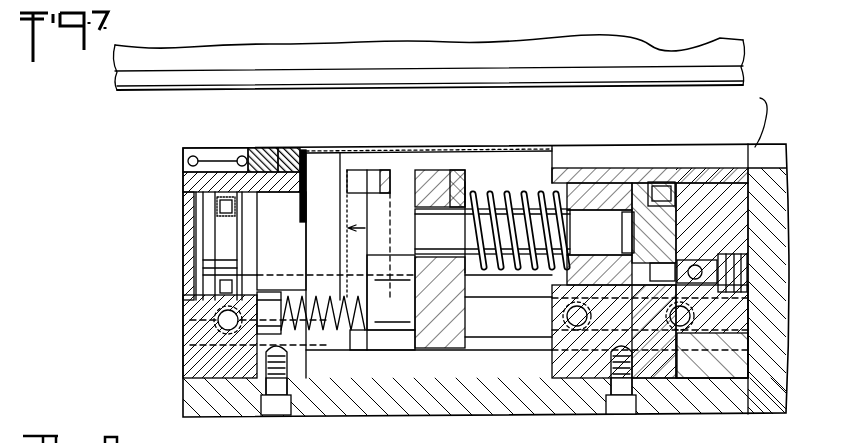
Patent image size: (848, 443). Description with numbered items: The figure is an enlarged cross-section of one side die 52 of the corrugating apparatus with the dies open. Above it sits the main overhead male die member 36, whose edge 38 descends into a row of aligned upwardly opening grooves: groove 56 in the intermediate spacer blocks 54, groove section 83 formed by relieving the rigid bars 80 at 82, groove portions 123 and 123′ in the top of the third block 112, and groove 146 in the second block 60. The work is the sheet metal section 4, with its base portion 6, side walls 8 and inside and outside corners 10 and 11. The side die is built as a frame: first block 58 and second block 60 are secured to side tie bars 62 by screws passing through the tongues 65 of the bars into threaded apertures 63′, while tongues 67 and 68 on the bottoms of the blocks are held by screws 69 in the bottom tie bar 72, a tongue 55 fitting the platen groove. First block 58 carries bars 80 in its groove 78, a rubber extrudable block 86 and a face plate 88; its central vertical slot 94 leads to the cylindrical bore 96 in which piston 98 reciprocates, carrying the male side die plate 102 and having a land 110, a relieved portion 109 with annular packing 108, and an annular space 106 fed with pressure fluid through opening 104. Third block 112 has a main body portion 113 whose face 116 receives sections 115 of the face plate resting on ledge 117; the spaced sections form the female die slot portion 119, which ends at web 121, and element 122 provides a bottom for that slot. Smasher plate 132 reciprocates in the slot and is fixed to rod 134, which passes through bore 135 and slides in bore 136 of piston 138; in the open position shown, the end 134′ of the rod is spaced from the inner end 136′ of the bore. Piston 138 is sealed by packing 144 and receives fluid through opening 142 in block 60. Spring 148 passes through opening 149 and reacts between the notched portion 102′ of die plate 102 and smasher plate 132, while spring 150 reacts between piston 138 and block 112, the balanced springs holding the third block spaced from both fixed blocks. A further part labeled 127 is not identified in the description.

The main overhead male die member 36 is at (402, 46).
The edge of main overhead male die member 38 is at (436, 88).
The relieved end portion of bars 82 is at (192, 150).
The rigid bars 80 is at (208, 150).
The piston 98 is at (258, 160).
The extrudable block 86 is at (265, 150).
The face plate 88 is at (288, 150).
The outside corner 11 is at (312, 153).
The groove continuation 123′ is at (358, 150).
The face of main body portion 116 is at (388, 153).
The groove portion 123 is at (422, 150).
The base portion 6 is at (506, 150).
The sheet metal section 4 is at (590, 150).
The upwardly opening groove 146 is at (648, 150).
The upwardly opening groove 56 is at (767, 153).
The groove section 83 is at (185, 163).
The groove in first block 78 is at (185, 177).
The inside corner 10 is at (323, 265).
The side walls 8 is at (308, 205).
The element with concave edge 122 is at (385, 190).
The bore in main body portion 135 is at (435, 205).
The compression spring 150 is at (498, 200).
The bore of piston 136 is at (636, 172).
The packing 144 is at (678, 200).
The piston 138 is at (700, 208).
The second block 60 is at (770, 205).
The opening 142 is at (745, 240).
The intermediate spacer blocks 54 is at (775, 262).
The annular packing 108 is at (225, 210).
The relieved portion of piston 109 is at (228, 220).
The land on piston 110 is at (208, 236).
The opening in block wall 104 is at (196, 248).
The annular space 106 is at (215, 288).
The cylindrical bore 96 is at (205, 298).
The first block 58 is at (176, 329).
The threaded apertures 63′ is at (222, 325).
The central vertical slot 94 is at (250, 322).
The male side die plate 102 is at (281, 241).
The notched portion of die plate 102′ is at (278, 292).
The side tie bars 62 is at (404, 260).
The female side die slot portion 119 is at (338, 229).
The central web portion 121 is at (330, 232).
The ledge 117 is at (382, 255).
The member 127 is at (407, 267).
The face plate sections 115 is at (323, 303).
The smasher plate 132 is at (382, 302).
The main body portion 113 is at (440, 302).
The rod 134 is at (492, 227).
The end of rod 134′ is at (628, 222).
The inner end of bore 136′ is at (630, 232).
The tongue of first block 67 is at (340, 340).
The compression spring 148 is at (380, 345).
The opening 149 is at (405, 345).
The third block 112 is at (414, 363).
The tongues of side bars 65 is at (577, 273).
The tongue of second block 68 is at (552, 364).
The screws 69 is at (282, 410).
The bottom tie bar 72 is at (485, 408).
The side die 52 is at (520, 422).
The tongue 55 is at (776, 414).